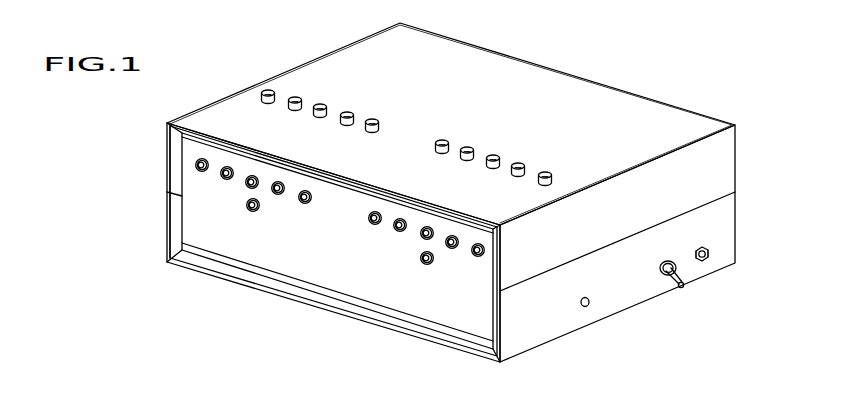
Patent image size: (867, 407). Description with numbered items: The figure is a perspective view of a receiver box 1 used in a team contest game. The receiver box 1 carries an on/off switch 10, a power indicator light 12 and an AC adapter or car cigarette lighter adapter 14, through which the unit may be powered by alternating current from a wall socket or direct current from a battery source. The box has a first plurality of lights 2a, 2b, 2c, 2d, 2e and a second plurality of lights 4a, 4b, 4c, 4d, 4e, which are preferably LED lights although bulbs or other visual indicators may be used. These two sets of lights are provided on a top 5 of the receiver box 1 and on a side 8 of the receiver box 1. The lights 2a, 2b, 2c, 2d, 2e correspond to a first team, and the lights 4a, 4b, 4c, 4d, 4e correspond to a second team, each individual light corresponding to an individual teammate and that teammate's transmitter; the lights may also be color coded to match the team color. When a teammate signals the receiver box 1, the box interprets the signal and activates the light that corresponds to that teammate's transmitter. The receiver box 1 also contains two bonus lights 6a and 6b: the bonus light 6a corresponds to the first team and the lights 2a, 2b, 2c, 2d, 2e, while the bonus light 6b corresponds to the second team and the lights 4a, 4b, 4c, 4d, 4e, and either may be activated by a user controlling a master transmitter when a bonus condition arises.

The receiver box 1 is at (627, 80).
The light 2a is at (195, 165).
The light 2b is at (220, 175).
The light 2c is at (245, 184).
The light 2d is at (276, 195).
The light 2e is at (304, 204).
The light 4a is at (373, 221).
The light 4b is at (398, 228).
The light 4c is at (425, 236).
The light 4d is at (451, 246).
The light 4e is at (478, 256).
The top 5 is at (258, 134).
The bonus light 6a is at (248, 207).
The bonus light 6b is at (427, 262).
The side 8 is at (345, 221).
The on/off switch 10 is at (684, 286).
The power indicator light 12 is at (590, 302).
The AC adapter or car cigarette lighter adapter 14 is at (710, 254).